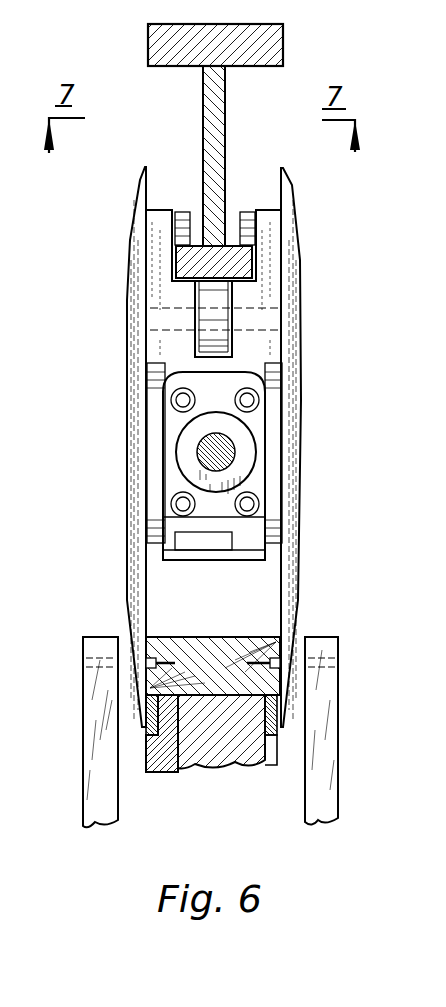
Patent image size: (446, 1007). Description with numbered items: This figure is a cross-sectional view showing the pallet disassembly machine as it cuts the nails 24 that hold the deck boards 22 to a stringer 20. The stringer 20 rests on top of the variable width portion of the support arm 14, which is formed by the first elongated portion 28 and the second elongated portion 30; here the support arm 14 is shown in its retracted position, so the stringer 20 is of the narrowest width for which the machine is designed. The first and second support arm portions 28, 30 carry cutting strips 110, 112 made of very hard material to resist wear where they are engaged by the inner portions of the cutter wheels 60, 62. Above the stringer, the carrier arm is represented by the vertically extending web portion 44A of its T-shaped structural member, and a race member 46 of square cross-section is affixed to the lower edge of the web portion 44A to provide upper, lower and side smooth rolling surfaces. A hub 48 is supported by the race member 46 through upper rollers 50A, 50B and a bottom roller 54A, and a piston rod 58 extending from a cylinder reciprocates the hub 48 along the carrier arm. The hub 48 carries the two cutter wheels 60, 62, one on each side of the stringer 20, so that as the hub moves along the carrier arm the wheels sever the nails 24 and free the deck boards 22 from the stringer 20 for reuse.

The support arm 14 is at (178, 724).
The stringer 20 is at (220, 648).
The deck boards 22 is at (100, 758).
The nails 24 is at (156, 660).
The first elongated portion 28 is at (166, 774).
The second elongated portion 30 is at (207, 762).
The web portion 44A is at (213, 106).
The race member 46 is at (247, 265).
The hub 48 is at (260, 345).
The upper roller 50A is at (186, 212).
The upper roller 50B is at (246, 212).
The bottom roller 54A is at (205, 300).
The piston rod 58 is at (203, 452).
The cutter wheel 60 is at (132, 502).
The cutter wheel 62 is at (293, 558).
The cutting strip 110 is at (268, 746).
The cutting strip 112 is at (146, 720).